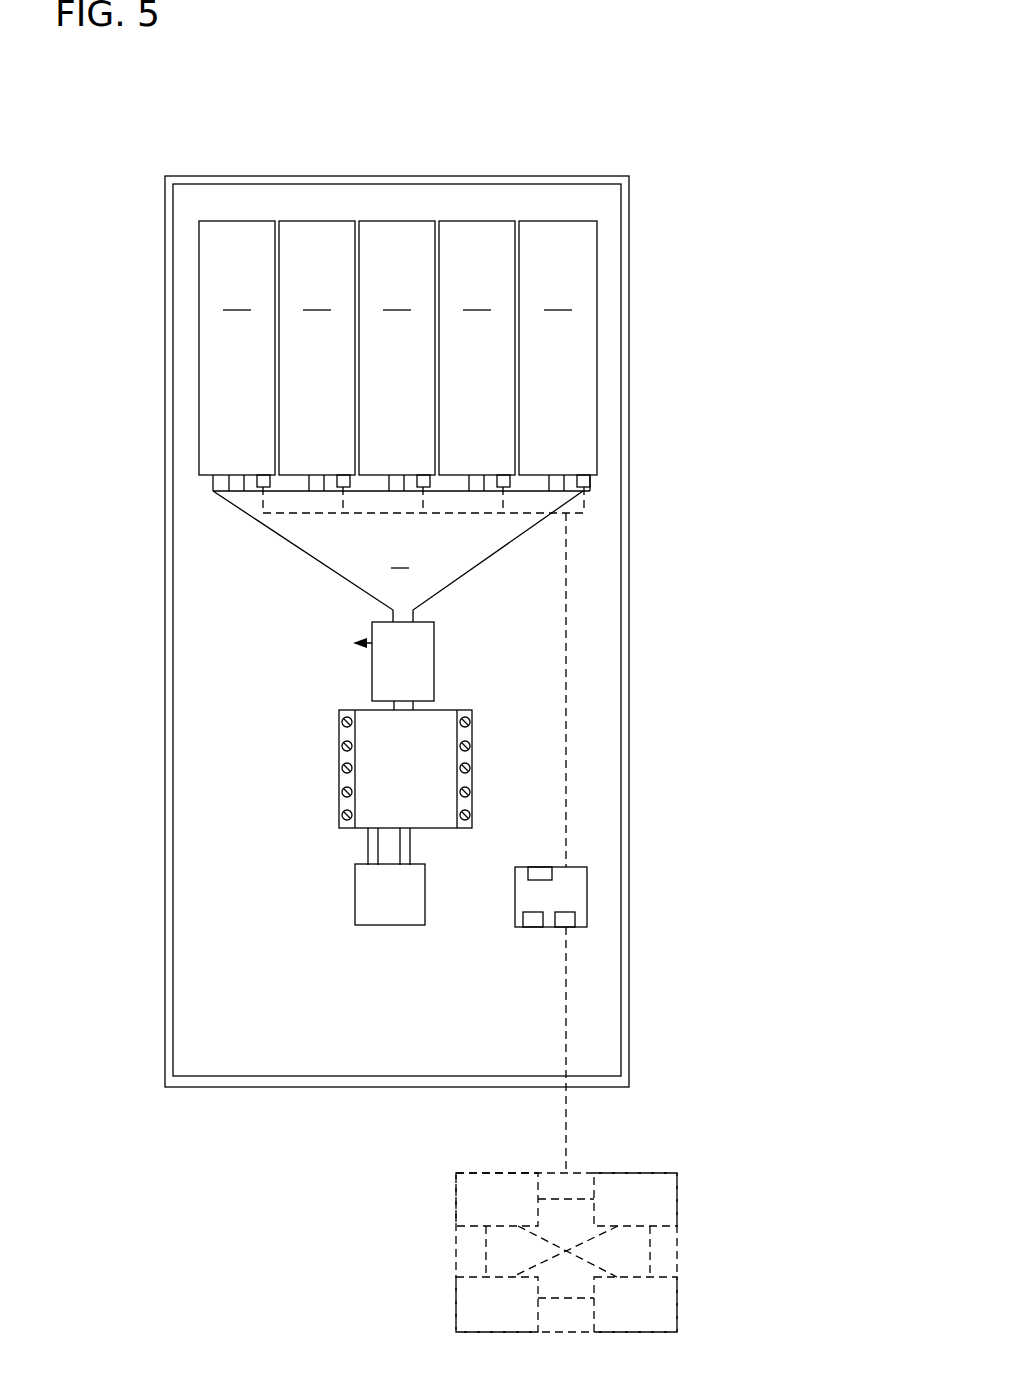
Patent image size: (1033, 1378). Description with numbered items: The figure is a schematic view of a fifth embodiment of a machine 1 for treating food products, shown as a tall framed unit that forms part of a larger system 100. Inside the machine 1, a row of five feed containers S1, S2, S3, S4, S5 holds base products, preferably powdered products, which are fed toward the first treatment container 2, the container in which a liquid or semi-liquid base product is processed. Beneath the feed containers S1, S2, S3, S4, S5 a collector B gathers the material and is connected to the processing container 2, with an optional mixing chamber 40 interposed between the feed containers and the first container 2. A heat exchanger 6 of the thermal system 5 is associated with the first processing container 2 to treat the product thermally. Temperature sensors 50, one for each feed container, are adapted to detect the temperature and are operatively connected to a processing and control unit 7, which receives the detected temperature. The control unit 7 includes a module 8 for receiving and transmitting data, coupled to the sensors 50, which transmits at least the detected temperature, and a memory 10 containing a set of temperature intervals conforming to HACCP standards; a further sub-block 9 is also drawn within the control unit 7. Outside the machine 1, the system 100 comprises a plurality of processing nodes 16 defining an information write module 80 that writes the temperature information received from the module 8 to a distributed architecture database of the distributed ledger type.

The machine 1 is at (680, 169).
The first treatment container 2 is at (360, 767).
The thermal system 5 is at (382, 909).
The heat exchanger 6 is at (336, 760).
The processing and control unit 7 is at (549, 896).
The module for receiving and transmitting data 8 is at (568, 929).
The processor 9 is at (541, 866).
The memory 10 is at (533, 929).
The mixing chamber 40 is at (389, 667).
The temperature sensor 50 is at (263, 471).
The system for treating food products 100 is at (652, 1252).
The processing node 16 is at (566, 1252).
The information write module 80 is at (506, 1212).
The feed container S1 is at (237, 348).
The feed container S2 is at (317, 348).
The feed container S3 is at (397, 348).
The feed container S4 is at (477, 348).
The feed container S5 is at (558, 348).
The collector B is at (398, 556).